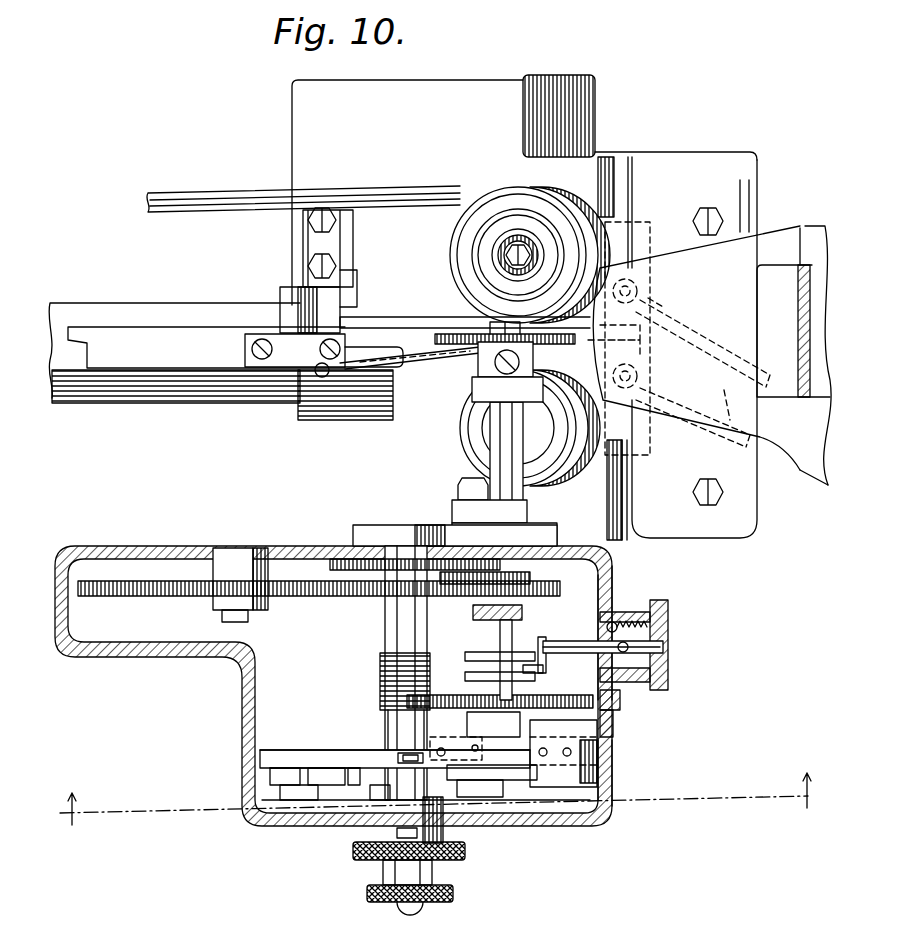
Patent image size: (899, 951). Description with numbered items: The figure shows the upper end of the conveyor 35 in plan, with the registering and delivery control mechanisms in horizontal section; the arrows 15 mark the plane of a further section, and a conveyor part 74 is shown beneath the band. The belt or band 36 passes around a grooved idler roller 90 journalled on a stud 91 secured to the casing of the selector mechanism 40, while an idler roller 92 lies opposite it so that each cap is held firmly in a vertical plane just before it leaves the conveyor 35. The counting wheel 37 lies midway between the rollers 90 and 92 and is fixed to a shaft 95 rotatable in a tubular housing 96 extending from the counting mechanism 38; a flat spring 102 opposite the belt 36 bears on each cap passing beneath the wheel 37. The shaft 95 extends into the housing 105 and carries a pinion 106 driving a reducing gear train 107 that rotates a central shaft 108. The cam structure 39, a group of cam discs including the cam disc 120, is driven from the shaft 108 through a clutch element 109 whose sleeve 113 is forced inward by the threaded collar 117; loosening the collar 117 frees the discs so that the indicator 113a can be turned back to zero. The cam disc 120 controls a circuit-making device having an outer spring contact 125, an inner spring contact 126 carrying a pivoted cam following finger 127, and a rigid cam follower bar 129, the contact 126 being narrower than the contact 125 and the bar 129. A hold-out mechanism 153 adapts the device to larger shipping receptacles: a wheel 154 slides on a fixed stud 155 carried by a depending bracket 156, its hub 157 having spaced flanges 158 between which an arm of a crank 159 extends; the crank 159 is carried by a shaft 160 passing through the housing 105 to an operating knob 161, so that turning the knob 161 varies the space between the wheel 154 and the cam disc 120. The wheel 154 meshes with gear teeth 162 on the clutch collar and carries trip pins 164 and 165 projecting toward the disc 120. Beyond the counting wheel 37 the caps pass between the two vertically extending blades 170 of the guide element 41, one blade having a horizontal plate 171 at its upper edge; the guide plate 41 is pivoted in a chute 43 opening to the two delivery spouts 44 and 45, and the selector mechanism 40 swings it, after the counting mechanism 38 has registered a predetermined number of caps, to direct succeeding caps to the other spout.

The section line 15 is at (450, 812).
The conveyor 35 is at (118, 302).
The belt or band 36 is at (195, 326).
The counting wheel 37 is at (450, 334).
The counting mechanism 38 is at (148, 650).
The cam structure 39 is at (335, 772).
The selector mechanism 40 is at (740, 522).
The guide plate 41 is at (683, 328).
The chute 43 is at (648, 255).
The delivery spout 44 is at (822, 462).
The delivery spout 45 is at (810, 232).
The hatched strip 74 is at (185, 365).
The grooved idler roller 90 is at (470, 222).
The stud 91 is at (494, 252).
The idler roller 92 is at (462, 428).
The shaft 95 is at (500, 325).
The tubular housing 96 is at (496, 446).
The flat spring 102 is at (408, 363).
The housing 105 is at (614, 567).
The pinion 106 is at (532, 579).
The reducing gear train 107 is at (150, 580).
The shaft 108 is at (385, 620).
The clutch element 109 is at (372, 714).
The sleeve 113 is at (375, 832).
The indicator 113a is at (385, 862).
The collar 117 is at (455, 893).
The cam disc 120 is at (258, 755).
The outer spring contact 125 is at (470, 767).
The inner spring contact 126 is at (418, 764).
The cam following finger 127 is at (377, 750).
The cam follower bar 129 is at (526, 729).
The hold-out mechanism 153 is at (618, 698).
The wheel 154 is at (440, 695).
The fixed stud 155 is at (533, 681).
The depending bracket 156 is at (527, 612).
The hub 157 is at (545, 678).
The spaced flanges 158 is at (492, 648).
The crank 159 is at (541, 645).
The shaft 160 is at (640, 648).
The operating knob 161 is at (668, 668).
The gear teeth 162 is at (380, 663).
The pin 164 is at (620, 717).
The second pin 165 is at (504, 738).
The blades 170 is at (714, 348).
The horizontal plate 171 is at (726, 425).